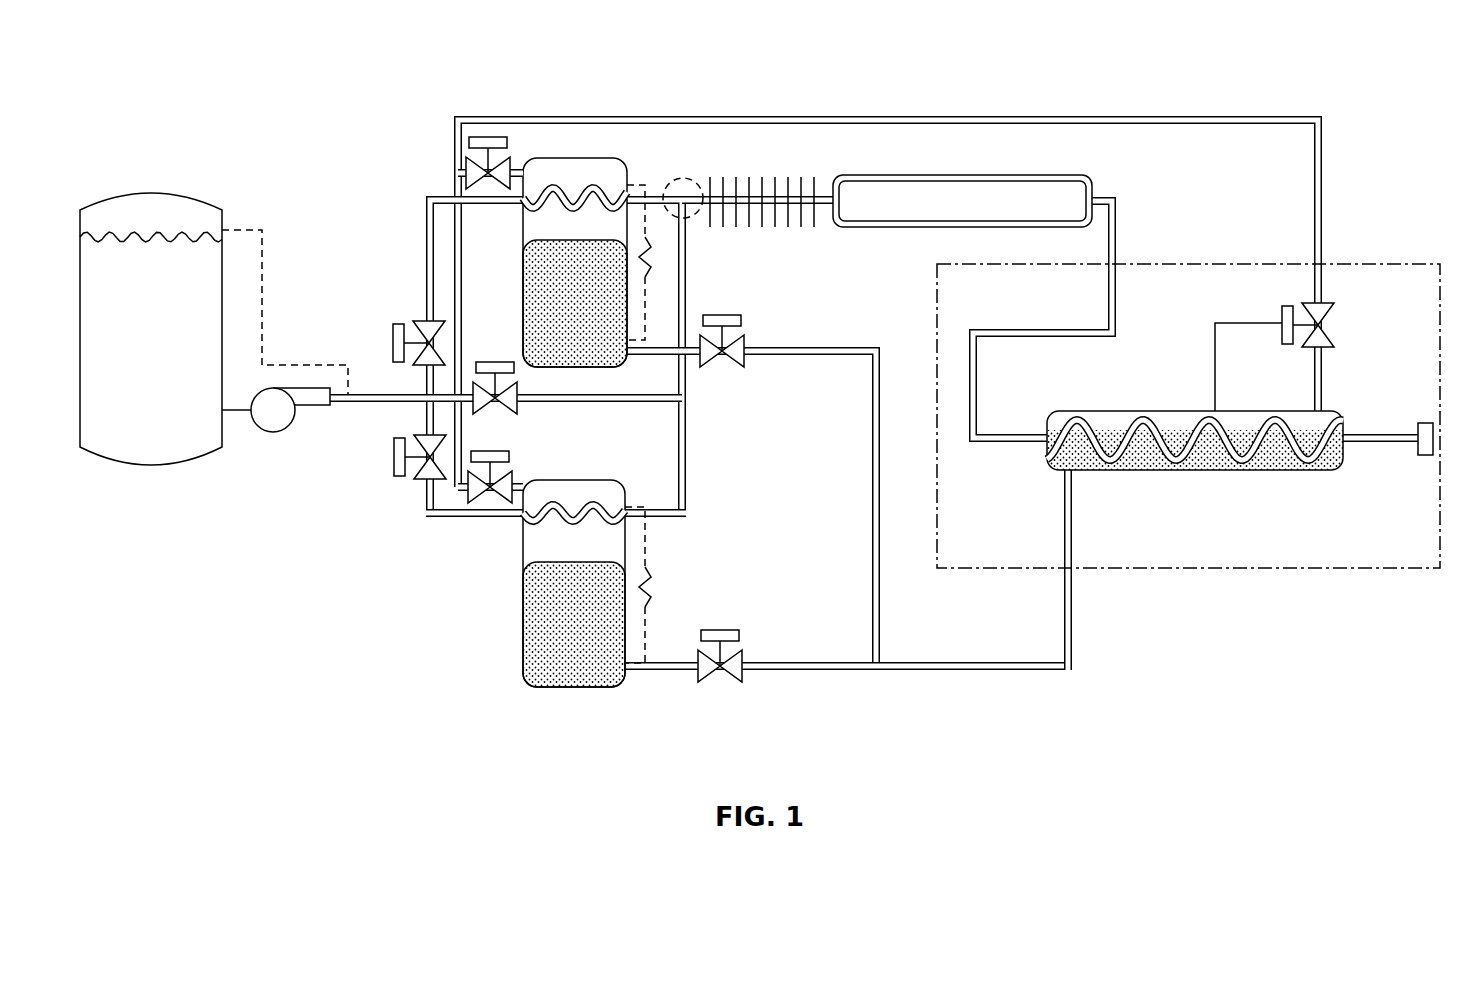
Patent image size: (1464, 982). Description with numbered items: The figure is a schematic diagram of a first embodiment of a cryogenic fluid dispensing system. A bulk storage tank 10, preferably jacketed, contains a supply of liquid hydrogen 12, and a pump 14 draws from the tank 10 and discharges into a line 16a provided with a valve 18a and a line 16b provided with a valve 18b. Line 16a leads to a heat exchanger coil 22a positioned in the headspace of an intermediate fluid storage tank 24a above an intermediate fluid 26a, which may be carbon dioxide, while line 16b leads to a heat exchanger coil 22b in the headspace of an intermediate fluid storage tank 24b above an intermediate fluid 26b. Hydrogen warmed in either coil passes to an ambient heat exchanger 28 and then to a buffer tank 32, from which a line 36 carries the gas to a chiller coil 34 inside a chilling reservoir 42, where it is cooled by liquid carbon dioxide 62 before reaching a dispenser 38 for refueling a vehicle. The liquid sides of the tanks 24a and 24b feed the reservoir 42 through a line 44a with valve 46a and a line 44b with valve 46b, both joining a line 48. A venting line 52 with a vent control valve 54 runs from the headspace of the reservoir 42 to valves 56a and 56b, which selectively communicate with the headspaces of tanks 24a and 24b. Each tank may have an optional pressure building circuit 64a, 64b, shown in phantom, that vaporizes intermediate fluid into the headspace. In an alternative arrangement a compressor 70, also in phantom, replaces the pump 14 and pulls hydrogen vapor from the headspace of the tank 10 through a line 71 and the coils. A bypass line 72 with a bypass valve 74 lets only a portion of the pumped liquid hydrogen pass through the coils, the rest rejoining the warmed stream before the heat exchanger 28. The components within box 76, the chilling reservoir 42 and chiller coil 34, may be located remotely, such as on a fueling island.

The bulk storage tank 10 is at (150, 193).
The liquid hydrogen 12 is at (166, 345).
The pump 14 is at (272, 432).
The line 16a is at (427, 213).
The line 16b is at (425, 495).
The valve 18a is at (400, 325).
The valve 18b is at (395, 457).
The heat exchanger coil 22a is at (605, 172).
The heat exchanger coil 22b is at (527, 532).
The intermediate fluid storage tank 24a is at (545, 158).
The intermediate fluid storage tank 24b is at (523, 555).
The intermediate fluid 26a is at (580, 367).
The intermediate fluid 26b is at (530, 663).
The heat exchanger 28 is at (800, 178).
The buffer tank 32 is at (940, 175).
The chiller coil 34 is at (1245, 470).
The line 36 is at (1115, 232).
The dispenser 38 is at (1425, 423).
The chilling reservoir 42 is at (1165, 411).
The line 44a is at (790, 356).
The line 44b is at (762, 672).
The valve 46a is at (742, 320).
The valve 46b is at (718, 630).
The line 48 is at (995, 672).
The venting line 52 is at (1322, 200).
The vent control valve 54 is at (1335, 325).
The valve 56a is at (488, 137).
The valve 56b is at (485, 452).
The liquid carbon dioxide 62 is at (1150, 470).
The pressure building circuit 64a is at (655, 262).
The pressure building circuit 64b is at (655, 580).
The compressor 70 is at (690, 180).
The line 71 is at (245, 228).
The bypass line 72 is at (565, 405).
The bypass valve 74 is at (515, 410).
The box 76 is at (1182, 570).